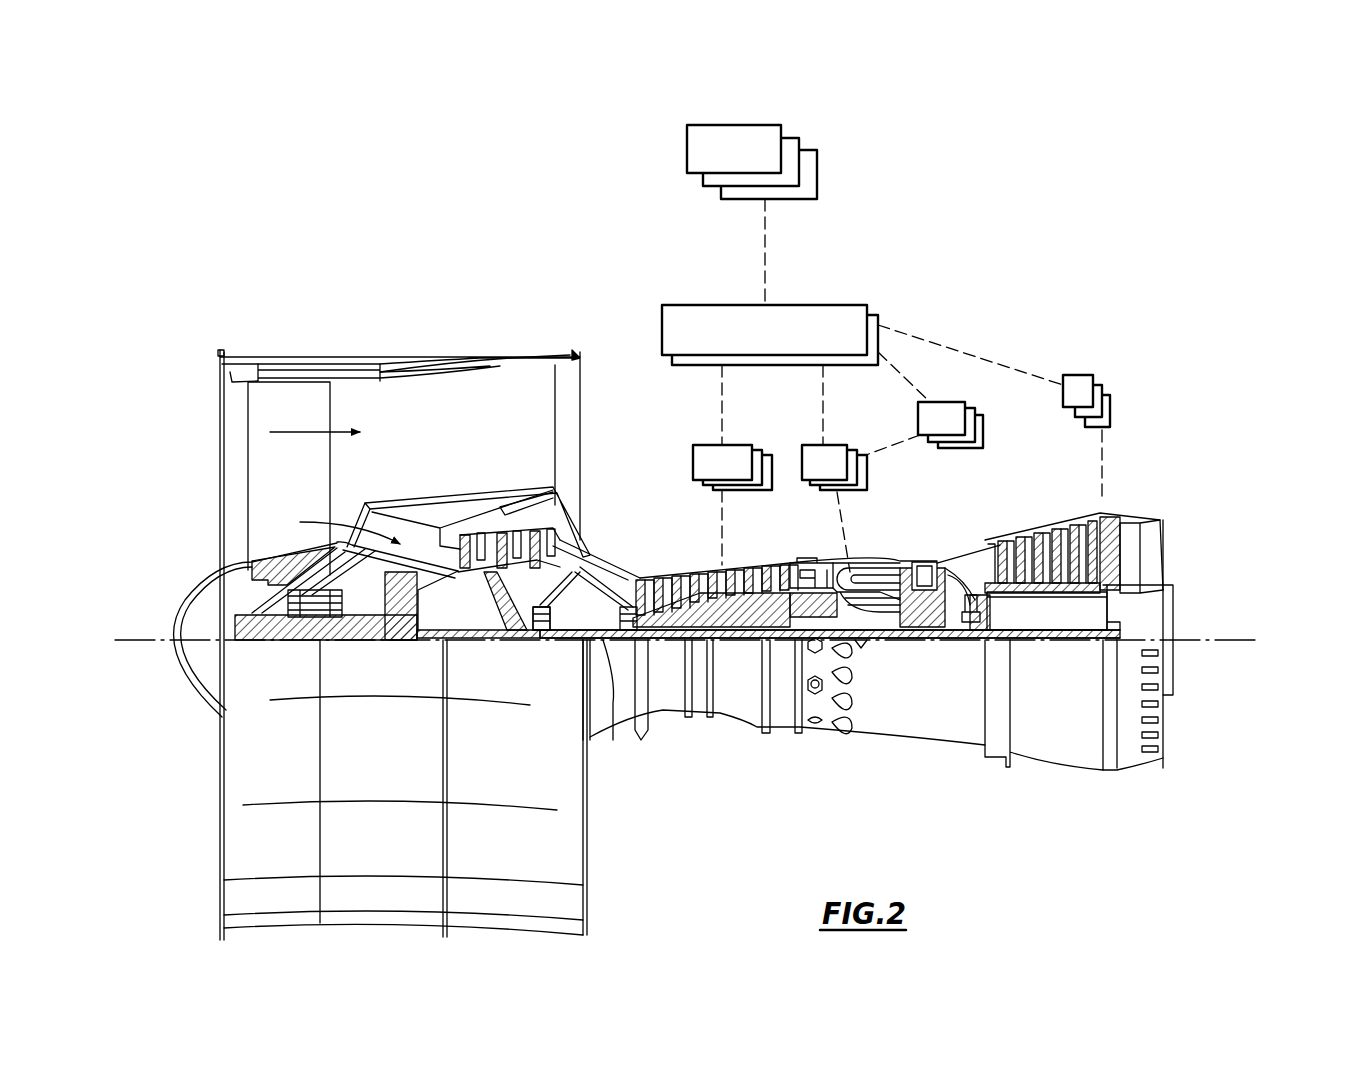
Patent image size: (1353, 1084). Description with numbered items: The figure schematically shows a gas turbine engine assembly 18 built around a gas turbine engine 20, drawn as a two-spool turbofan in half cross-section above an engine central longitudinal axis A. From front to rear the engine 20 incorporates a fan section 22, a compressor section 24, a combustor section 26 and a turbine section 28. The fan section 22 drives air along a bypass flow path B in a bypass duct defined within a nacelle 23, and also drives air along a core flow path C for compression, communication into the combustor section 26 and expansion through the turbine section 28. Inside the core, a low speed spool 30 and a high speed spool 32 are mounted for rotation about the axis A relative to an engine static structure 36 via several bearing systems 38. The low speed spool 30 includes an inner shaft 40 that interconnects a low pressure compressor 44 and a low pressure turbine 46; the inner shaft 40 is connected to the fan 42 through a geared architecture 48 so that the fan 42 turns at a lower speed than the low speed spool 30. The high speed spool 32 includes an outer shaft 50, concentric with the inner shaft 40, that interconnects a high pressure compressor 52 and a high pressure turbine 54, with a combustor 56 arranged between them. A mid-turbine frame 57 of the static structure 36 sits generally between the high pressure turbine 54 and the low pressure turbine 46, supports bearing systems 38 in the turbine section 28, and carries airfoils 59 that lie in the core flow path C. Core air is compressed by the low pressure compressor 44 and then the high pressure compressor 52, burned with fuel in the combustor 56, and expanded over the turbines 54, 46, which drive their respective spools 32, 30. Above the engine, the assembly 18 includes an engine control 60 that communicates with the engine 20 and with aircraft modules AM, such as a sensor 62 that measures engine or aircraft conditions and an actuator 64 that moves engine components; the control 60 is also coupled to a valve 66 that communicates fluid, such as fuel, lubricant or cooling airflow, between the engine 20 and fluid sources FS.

The gas turbine engine assembly 18 is at (286, 112).
The gas turbine engine 20 is at (361, 559).
The fan section 22 is at (333, 341).
The nacelle 23 is at (402, 358).
The compressor section 24 is at (778, 561).
The combustor section 26 is at (871, 546).
The turbine section 28 is at (1055, 534).
The low speed spool 30 is at (738, 652).
The high speed spool 32 is at (787, 587).
The engine static structure 36 is at (779, 734).
The bearing systems 38 is at (538, 628).
The inner shaft 40 is at (606, 703).
The fan 42 is at (306, 489).
The low pressure compressor 44 is at (520, 560).
The low pressure turbine 46 is at (1039, 523).
The geared architecture 48 is at (402, 628).
The outer shaft 50 is at (865, 640).
The high pressure compressor 52 is at (715, 588).
The high pressure turbine 54 is at (921, 564).
The combustor 56 is at (862, 583).
The mid-turbine frame 57 is at (969, 538).
The airfoils 59 is at (1000, 608).
The engine control 60 is at (860, 305).
The sensor 62 is at (1101, 385).
The actuator 64 is at (760, 450).
The valve 66 is at (855, 450).
The engine central longitudinal axis A is at (1252, 640).
The bypass flow path B is at (301, 428).
The core flow path C is at (341, 524).
The aircraft modules AM is at (817, 151).
The fluid sources FS is at (973, 408).